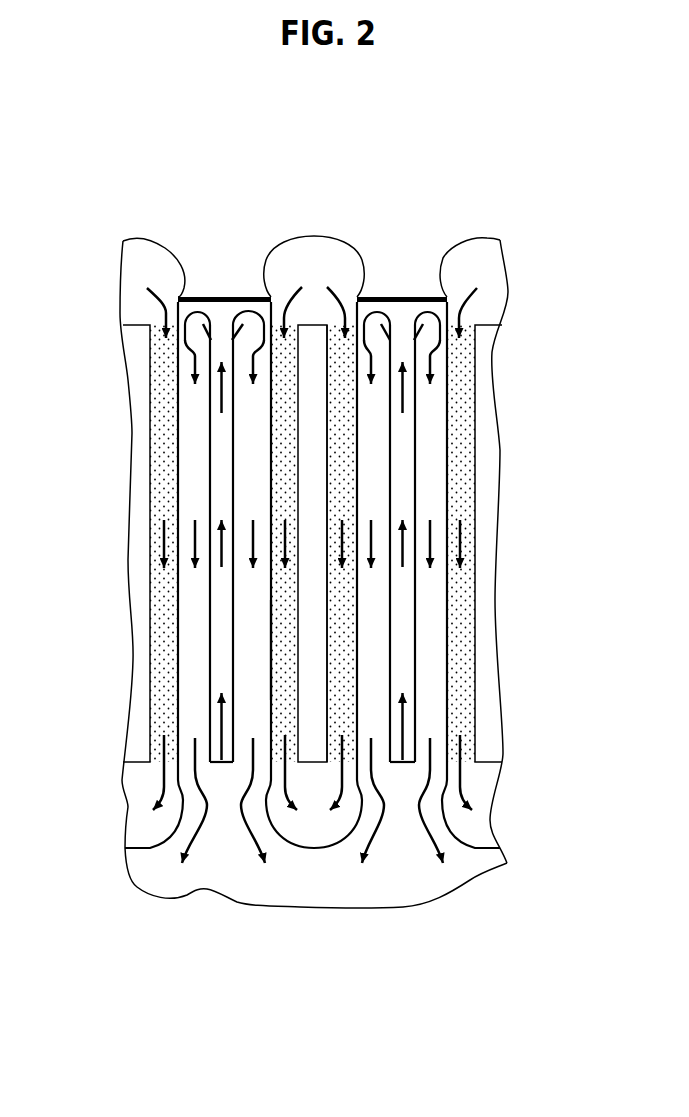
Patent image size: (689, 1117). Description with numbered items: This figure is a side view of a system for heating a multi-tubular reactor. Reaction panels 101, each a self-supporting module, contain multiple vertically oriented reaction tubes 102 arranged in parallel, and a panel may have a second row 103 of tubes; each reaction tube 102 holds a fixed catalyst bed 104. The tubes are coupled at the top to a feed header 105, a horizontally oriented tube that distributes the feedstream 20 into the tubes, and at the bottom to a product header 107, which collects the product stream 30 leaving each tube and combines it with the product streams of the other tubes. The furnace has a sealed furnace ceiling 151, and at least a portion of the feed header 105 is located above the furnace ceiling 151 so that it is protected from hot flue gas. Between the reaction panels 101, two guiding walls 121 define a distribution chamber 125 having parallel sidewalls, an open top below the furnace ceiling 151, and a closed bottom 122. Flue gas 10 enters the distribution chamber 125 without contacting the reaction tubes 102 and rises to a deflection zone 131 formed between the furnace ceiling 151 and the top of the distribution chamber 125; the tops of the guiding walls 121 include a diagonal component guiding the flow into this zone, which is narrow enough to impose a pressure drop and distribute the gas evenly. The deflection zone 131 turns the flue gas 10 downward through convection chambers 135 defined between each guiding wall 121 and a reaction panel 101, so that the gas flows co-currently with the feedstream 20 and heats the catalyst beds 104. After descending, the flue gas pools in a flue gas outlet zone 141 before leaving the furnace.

The flue gas 10 is at (222, 732).
The feedstream 20 is at (325, 290).
The product stream 30 is at (338, 800).
The reaction panel 101 is at (313, 480).
The reaction tube 102 is at (327, 461).
The second row 103 is at (271, 498).
The fixed catalyst bed 104 is at (290, 443).
The feed header 105 is at (310, 260).
The product header 107 is at (318, 820).
The guiding wall 121 is at (205, 398).
The closed bottom 122 is at (222, 757).
The distribution chamber 125 is at (223, 617).
The deflection zone 131 is at (221, 328).
The convection chamber 135 is at (373, 657).
The flue gas outlet zone 141 is at (292, 885).
The furnace ceiling 151 is at (170, 525).